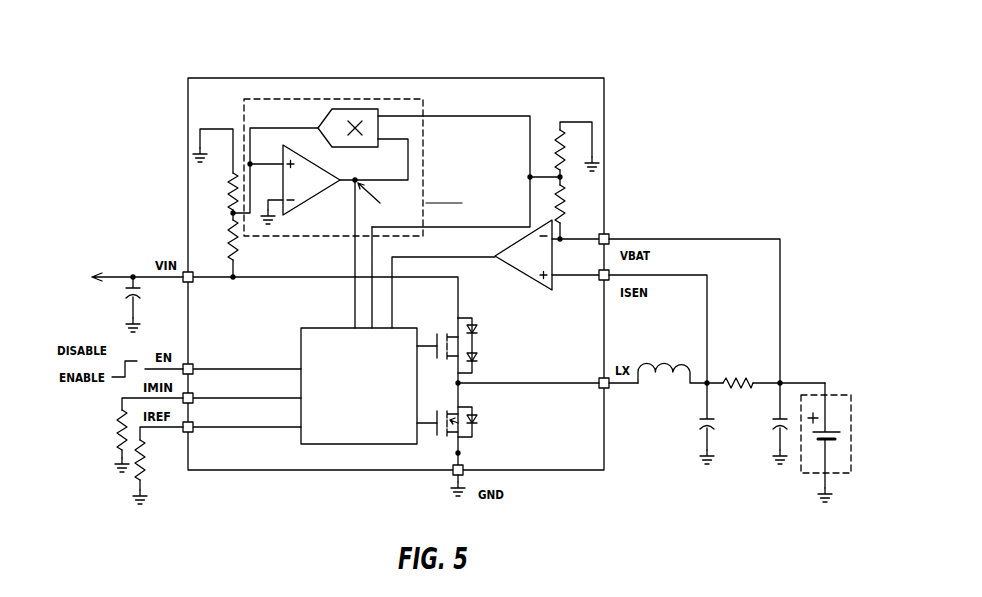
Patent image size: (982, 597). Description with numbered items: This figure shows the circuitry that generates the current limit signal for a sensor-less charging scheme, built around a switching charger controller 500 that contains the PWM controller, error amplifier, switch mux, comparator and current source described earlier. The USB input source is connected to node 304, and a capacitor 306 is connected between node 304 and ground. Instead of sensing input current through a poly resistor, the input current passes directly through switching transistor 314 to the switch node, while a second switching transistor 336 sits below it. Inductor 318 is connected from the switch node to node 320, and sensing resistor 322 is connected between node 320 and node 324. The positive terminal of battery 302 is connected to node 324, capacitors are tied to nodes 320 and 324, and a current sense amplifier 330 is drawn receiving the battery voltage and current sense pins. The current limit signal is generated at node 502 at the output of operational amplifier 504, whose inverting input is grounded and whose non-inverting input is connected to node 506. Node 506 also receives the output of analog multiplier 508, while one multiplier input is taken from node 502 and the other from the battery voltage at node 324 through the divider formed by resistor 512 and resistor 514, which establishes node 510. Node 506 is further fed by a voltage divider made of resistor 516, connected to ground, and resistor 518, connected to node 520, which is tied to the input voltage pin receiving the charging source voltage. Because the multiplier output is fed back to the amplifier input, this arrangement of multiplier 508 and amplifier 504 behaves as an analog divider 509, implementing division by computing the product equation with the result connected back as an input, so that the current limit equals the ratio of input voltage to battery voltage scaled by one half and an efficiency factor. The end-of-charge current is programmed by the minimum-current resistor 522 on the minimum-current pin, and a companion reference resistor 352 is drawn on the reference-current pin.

The battery 302 is at (851, 440).
The node 304 is at (134, 276).
The capacitor 306 is at (122, 292).
The switching transistor 314 is at (478, 337).
The inductor 318 is at (664, 370).
The node 320 is at (706, 381).
The sensing resistor 322 is at (738, 378).
The node 324 is at (783, 381).
The current sense amplifier CSA 330 is at (498, 256).
The low-side switch Q2 336 is at (473, 436).
The resistor RIREF 352 is at (135, 468).
The switching charger controller 500 is at (301, 354).
The node 502 is at (352, 185).
The operational amplifier 504 is at (322, 172).
The input node 506 is at (250, 164).
The analog multiplier 508 is at (372, 109).
The analog divider 509 is at (283, 99).
The node 510 is at (531, 176).
The resistor 512 is at (566, 152).
The resistor 514 is at (566, 216).
The resistor 516 is at (224, 186).
The resistor 518 is at (235, 244).
The node 520 is at (235, 280).
The resistor RIMIN 522 is at (117, 420).